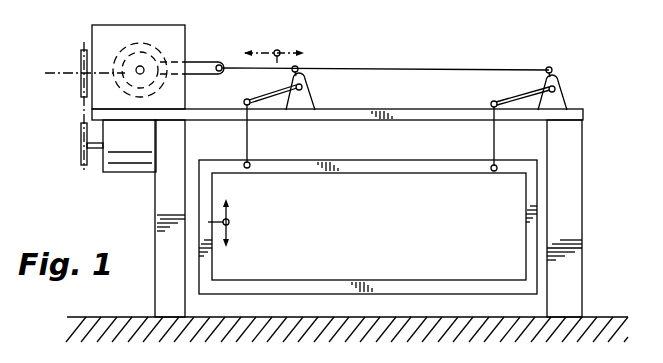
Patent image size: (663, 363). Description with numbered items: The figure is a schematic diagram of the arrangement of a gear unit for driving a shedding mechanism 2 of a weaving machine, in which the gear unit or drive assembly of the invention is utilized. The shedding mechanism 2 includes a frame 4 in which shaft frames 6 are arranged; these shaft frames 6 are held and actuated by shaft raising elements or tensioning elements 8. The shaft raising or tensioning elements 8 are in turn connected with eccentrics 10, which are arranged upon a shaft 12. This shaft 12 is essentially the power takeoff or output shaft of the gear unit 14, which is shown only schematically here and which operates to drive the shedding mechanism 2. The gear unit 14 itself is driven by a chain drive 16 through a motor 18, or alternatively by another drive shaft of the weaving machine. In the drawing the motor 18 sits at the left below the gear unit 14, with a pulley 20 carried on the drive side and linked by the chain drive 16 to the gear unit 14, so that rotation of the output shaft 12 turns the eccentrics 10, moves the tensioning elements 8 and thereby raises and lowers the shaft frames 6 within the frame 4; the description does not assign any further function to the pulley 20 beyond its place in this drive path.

The shedding mechanism 2 is at (476, 56).
The frame 4 is at (430, 118).
The shaft frames 6 is at (433, 173).
The shaft raising elements 8 is at (367, 58).
The eccentrics 10 is at (154, 87).
The shaft 12 is at (143, 67).
The gear unit 14 is at (206, 49).
The chain drive 16 is at (80, 102).
The motor 18 is at (124, 172).
The pulley 20 is at (52, 72).